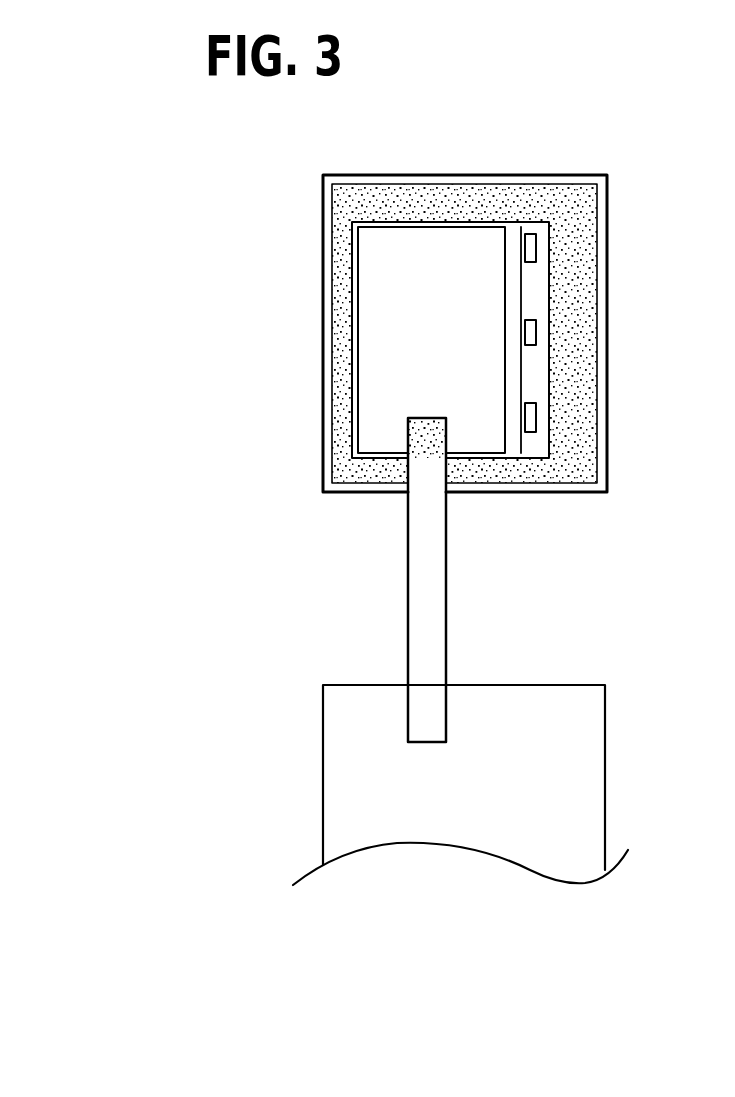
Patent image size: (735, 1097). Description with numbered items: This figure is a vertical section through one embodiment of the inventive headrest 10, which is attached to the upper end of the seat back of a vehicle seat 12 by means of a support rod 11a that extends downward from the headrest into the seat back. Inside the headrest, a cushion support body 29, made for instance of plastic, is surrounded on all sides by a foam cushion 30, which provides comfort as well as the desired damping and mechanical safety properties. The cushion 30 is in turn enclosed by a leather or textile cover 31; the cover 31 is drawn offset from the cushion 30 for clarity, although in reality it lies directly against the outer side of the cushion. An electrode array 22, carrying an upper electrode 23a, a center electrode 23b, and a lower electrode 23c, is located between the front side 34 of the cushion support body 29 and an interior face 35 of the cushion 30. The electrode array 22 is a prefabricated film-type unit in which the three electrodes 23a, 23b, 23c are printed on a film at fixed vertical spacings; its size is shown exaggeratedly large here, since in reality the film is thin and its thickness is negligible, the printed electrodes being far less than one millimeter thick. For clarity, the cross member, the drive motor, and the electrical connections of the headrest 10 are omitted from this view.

The headrest 10 is at (252, 217).
The support rod 11a is at (428, 600).
The vehicle seat 12 is at (585, 747).
The electrode array 22 is at (522, 275).
The upper electrode 23a is at (528, 237).
The center electrode 23b is at (535, 332).
The lower electrode 23c is at (533, 423).
The cushion support body 29 is at (443, 321).
The foam cushion 30 is at (580, 448).
The cover 31 is at (608, 205).
The front side 34 is at (510, 388).
The interior face 35 is at (542, 300).